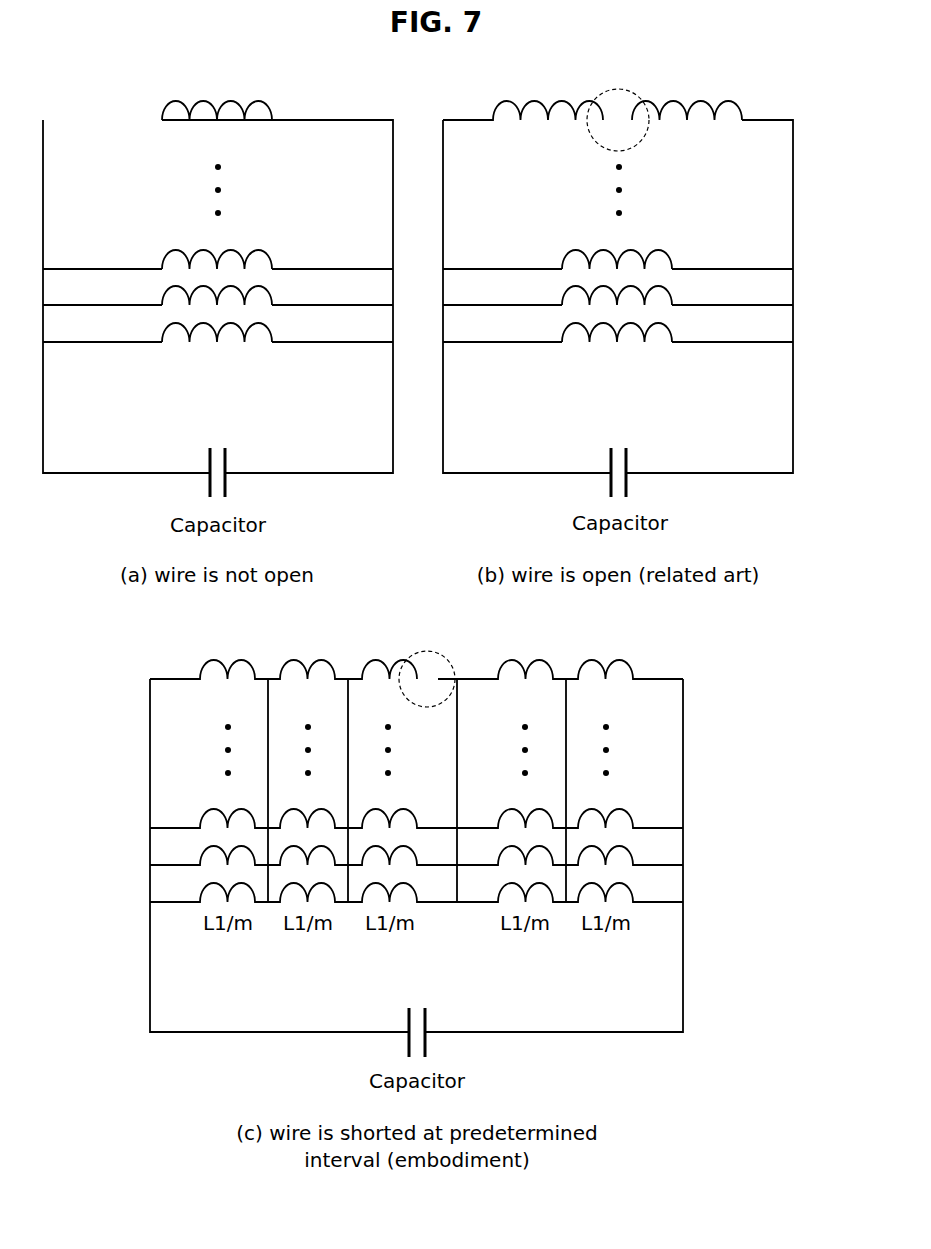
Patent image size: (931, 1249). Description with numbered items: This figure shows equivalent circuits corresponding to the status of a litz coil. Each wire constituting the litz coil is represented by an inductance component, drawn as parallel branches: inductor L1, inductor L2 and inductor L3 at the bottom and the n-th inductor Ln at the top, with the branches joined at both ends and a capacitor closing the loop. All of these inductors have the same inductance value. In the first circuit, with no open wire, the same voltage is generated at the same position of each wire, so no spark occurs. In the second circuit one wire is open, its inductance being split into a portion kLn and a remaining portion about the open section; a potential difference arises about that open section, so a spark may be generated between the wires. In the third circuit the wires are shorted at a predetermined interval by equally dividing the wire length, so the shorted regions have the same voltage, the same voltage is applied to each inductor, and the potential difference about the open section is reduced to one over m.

The n-th inductor Ln is at (232, 107).
The inductor L3 is at (432, 256).
The inductor L2 is at (432, 292).
The inductor L1 is at (432, 329).
The partial inductance of open wire kLn is at (523, 107).